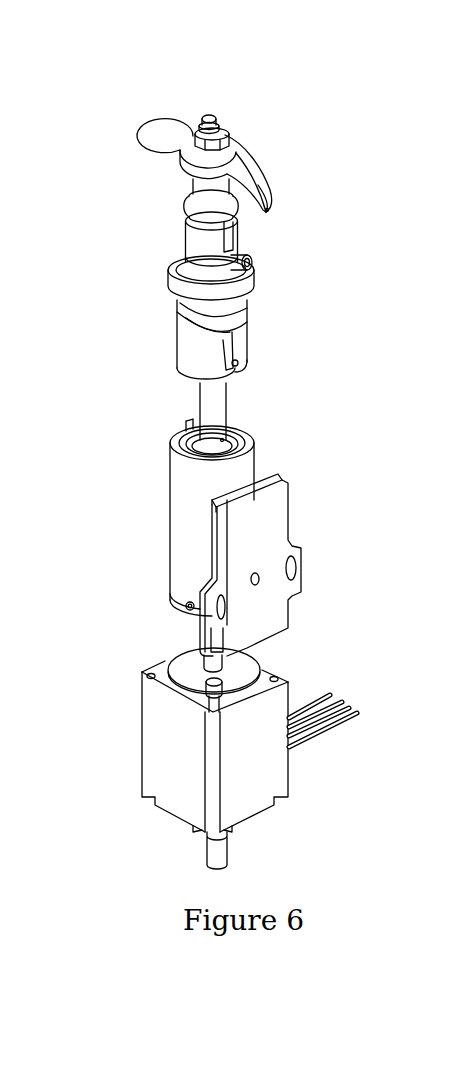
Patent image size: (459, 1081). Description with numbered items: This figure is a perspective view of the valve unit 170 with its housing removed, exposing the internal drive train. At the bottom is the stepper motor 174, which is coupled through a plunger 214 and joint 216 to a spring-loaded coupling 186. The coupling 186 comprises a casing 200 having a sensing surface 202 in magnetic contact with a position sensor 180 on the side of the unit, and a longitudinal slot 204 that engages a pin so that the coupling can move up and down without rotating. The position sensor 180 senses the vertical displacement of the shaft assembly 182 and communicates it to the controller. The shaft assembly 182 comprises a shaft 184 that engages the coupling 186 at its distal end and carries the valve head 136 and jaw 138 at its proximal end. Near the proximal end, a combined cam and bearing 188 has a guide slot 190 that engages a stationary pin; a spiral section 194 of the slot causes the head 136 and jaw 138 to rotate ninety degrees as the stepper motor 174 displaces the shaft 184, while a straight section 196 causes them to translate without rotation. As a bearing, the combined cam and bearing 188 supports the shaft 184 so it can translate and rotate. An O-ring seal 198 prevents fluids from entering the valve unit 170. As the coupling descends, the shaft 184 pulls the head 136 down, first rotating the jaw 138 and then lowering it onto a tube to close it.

The valve unit 170 is at (140, 116).
The valve head 136 is at (182, 152).
The jaw 138 is at (267, 178).
The O-ring seal 198 is at (183, 200).
The shaft assembly 182 is at (113, 255).
The combined cam and bearing 188 is at (243, 312).
The spiral section 194 is at (193, 313).
The guide slot 190 is at (233, 334).
The straight section 196 is at (239, 366).
The shaft 184 is at (229, 411).
The longitudinal slot 204 is at (181, 421).
The spring-loaded coupling 186 is at (253, 437).
The sensing surface 202 is at (247, 467).
The casing 200 is at (170, 480).
The position sensor 180 is at (288, 503).
The joint 216 is at (208, 658).
The plunger 214 is at (203, 667).
The stepper motor 174 is at (165, 758).